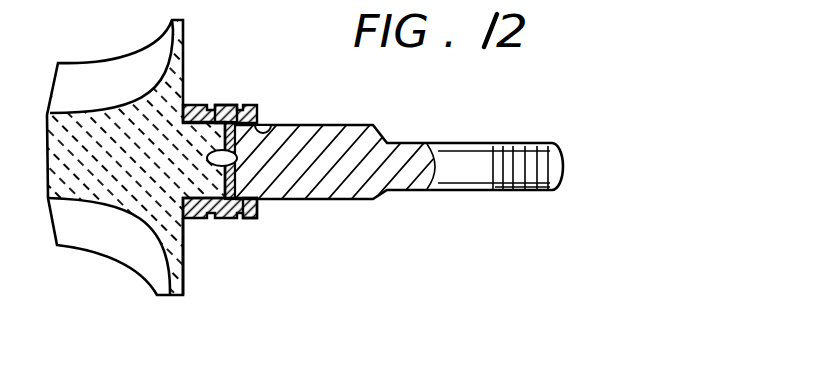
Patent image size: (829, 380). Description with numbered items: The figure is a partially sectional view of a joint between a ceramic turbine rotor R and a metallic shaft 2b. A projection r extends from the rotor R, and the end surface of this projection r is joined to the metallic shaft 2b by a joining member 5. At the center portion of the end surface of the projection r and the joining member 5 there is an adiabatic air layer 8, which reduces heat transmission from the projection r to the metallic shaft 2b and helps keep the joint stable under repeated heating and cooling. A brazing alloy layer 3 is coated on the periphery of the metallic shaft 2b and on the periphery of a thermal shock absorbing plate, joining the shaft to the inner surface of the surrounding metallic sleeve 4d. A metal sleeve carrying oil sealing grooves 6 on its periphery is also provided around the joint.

The ceramic turbine rotor R is at (98, 177).
The projection r is at (194, 218).
The brazing alloy layer 3 is at (375, 168).
The metallic shaft 2b is at (367, 199).
The joining member 5 is at (215, 105).
The oil sealing grooves 6 is at (211, 218).
The adiabatic air layer 8 is at (238, 105).
The metallic sleeve 4d is at (250, 218).